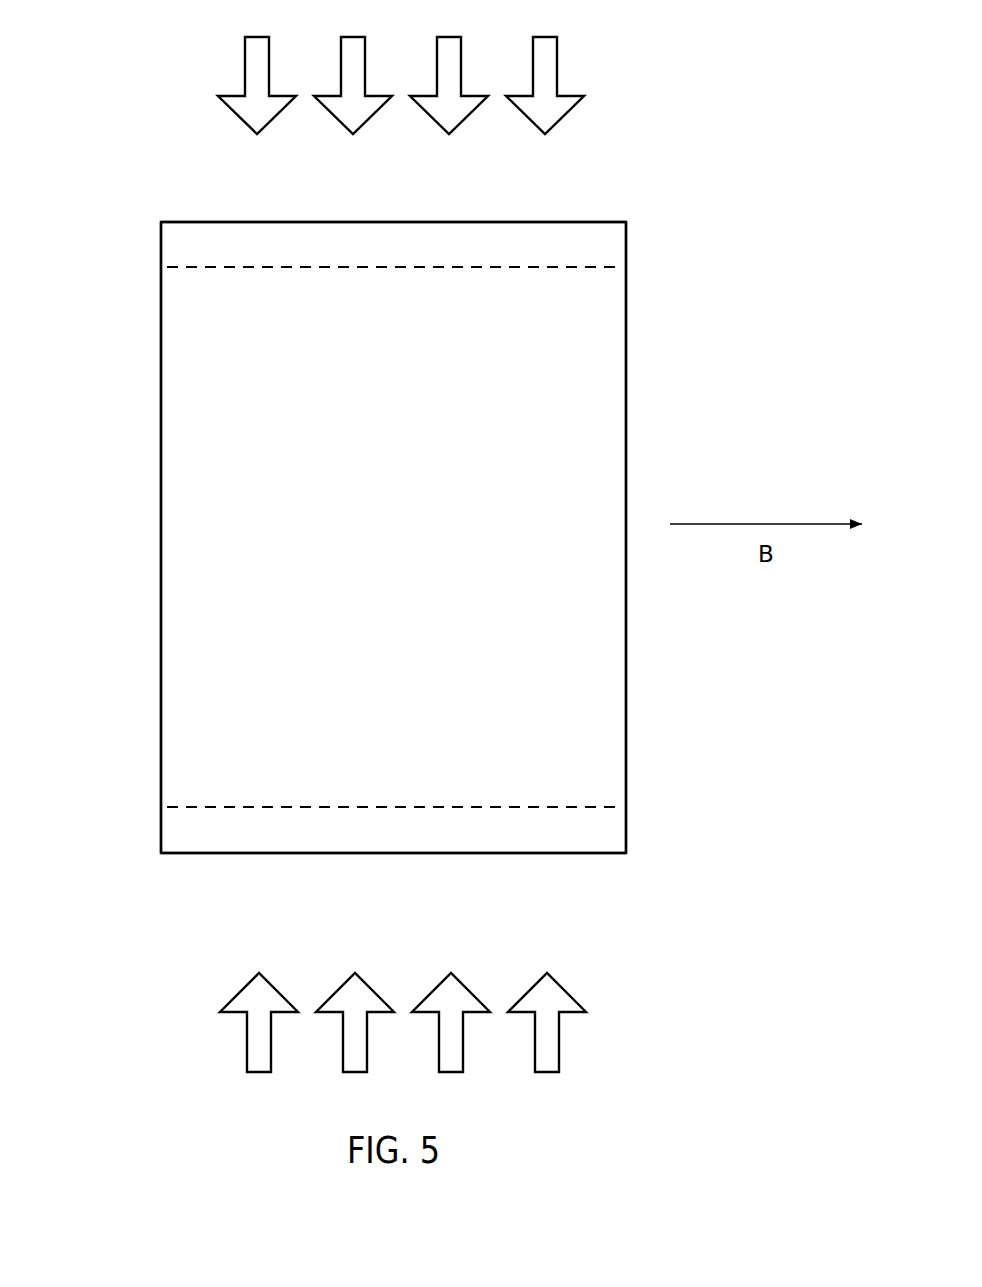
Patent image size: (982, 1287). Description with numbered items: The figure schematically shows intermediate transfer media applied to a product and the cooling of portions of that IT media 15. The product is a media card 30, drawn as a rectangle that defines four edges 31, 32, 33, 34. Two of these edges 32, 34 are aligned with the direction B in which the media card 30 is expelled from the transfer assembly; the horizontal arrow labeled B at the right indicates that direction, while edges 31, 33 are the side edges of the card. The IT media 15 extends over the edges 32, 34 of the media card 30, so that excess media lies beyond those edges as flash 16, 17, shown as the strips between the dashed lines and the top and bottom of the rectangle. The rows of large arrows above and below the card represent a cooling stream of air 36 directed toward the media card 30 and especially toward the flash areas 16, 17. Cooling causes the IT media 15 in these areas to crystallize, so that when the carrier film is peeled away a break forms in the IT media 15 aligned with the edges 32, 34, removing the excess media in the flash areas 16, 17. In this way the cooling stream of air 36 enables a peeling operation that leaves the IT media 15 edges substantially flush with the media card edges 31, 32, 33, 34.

The IT media 15 is at (382, 543).
The flash 16 is at (280, 831).
The flash 17 is at (285, 242).
The media card 30 is at (395, 544).
The edge 31 is at (161, 660).
The edge 32 is at (537, 807).
The edge 33 is at (627, 675).
The edge 34 is at (537, 266).
The cooling stream of air 36 is at (208, 62).